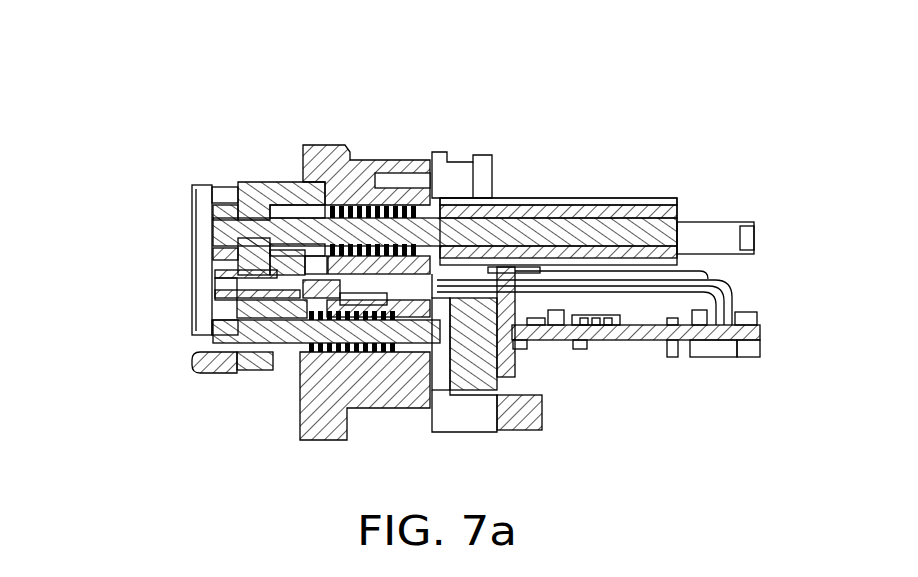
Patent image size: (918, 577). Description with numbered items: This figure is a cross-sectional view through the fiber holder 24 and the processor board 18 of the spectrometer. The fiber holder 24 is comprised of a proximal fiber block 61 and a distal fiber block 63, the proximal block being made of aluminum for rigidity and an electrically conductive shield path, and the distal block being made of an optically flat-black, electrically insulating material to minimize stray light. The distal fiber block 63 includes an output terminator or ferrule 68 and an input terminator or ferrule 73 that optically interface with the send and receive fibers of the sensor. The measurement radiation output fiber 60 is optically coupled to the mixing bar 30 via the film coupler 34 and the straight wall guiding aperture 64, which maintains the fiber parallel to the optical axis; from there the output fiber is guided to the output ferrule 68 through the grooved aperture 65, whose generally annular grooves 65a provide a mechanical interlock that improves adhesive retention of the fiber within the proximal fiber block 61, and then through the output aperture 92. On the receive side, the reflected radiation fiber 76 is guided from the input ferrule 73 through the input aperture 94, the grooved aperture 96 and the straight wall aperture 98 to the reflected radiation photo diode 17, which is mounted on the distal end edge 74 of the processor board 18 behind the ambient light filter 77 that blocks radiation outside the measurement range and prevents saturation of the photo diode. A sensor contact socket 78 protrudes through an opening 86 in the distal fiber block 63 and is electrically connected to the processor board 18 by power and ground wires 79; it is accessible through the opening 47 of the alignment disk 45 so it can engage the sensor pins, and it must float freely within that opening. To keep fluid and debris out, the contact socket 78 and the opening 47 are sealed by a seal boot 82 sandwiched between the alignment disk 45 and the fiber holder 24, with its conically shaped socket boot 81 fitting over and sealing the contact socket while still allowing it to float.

The reflected radiation photo diode 17 is at (489, 380).
The processor board 18 is at (665, 342).
The fiber holder 24 is at (459, 255).
The mixing bar 30 is at (580, 223).
The film coupler 34 is at (493, 220).
The alignment disk 45 is at (193, 205).
The opening 47 is at (207, 303).
The measurement radiation output fiber 60 is at (437, 217).
The proximal fiber block 61 is at (381, 205).
The distal fiber block 63 is at (278, 180).
The straight wall guiding aperture 64 is at (428, 215).
The grooved aperture 65 is at (385, 217).
The annular grooves 65a is at (410, 217).
The output terminator or ferrule 68 is at (223, 207).
The input terminator or ferrule 73 is at (193, 350).
The distal end edge 74 is at (500, 363).
The reflected radiation fiber 76 is at (288, 342).
The ambient light filter 77 is at (433, 372).
The sensor contact socket 78 is at (262, 258).
The power and ground wires 79 is at (745, 283).
The socket boot 81 is at (233, 268).
The seal boot 82 is at (243, 303).
The opening 86 is at (247, 323).
The output aperture 92 is at (255, 217).
The input aperture 94 is at (250, 362).
The grooved aperture 96 is at (342, 380).
The straight wall aperture 98 is at (400, 370).